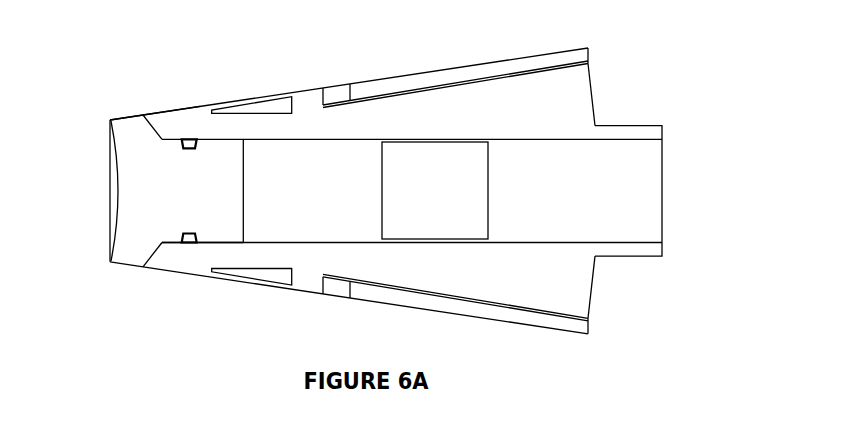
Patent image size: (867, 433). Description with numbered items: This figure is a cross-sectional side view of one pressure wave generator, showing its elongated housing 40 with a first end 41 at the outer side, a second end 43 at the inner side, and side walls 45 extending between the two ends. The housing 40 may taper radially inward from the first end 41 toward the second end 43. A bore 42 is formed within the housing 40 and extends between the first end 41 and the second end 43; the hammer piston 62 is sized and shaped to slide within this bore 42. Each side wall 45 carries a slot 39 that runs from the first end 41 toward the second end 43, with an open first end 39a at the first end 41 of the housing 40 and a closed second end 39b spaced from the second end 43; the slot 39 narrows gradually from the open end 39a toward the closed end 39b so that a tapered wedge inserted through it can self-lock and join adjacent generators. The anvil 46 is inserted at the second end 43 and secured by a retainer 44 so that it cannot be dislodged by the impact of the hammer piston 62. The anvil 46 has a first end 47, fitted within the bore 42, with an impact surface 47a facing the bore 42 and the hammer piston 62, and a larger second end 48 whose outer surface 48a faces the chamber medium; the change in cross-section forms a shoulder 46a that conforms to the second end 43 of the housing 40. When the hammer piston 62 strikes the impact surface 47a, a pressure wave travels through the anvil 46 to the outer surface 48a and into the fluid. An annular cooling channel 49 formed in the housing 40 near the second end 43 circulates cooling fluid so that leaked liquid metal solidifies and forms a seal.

The slot 39 is at (502, 61).
The first (open) end of slot 39a is at (587, 47).
The second (closed) end of slot 39b is at (334, 88).
The housing 40 is at (494, 116).
The first end of housing 41 is at (596, 72).
The bore 42 is at (633, 201).
The second end of housing 43 is at (170, 112).
The retainer 44 is at (187, 243).
The side wall 45 is at (305, 280).
The anvil 46 is at (179, 196).
The shoulder 46a is at (154, 136).
The first end of anvil 47 is at (219, 230).
The impact surface 47a is at (247, 197).
The second end of anvil 48 is at (134, 253).
The outer surface 48a is at (109, 205).
The cooling channel 49 is at (238, 109).
The hammer piston 62 is at (431, 211).